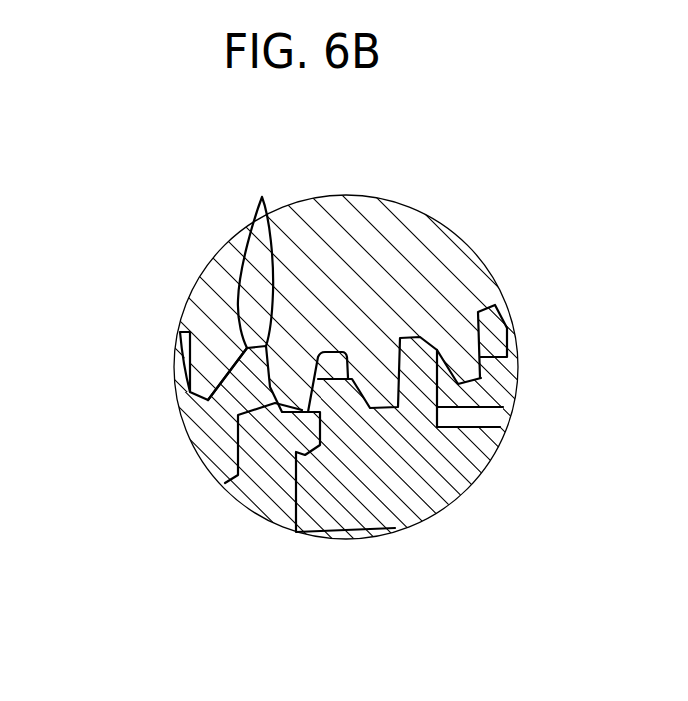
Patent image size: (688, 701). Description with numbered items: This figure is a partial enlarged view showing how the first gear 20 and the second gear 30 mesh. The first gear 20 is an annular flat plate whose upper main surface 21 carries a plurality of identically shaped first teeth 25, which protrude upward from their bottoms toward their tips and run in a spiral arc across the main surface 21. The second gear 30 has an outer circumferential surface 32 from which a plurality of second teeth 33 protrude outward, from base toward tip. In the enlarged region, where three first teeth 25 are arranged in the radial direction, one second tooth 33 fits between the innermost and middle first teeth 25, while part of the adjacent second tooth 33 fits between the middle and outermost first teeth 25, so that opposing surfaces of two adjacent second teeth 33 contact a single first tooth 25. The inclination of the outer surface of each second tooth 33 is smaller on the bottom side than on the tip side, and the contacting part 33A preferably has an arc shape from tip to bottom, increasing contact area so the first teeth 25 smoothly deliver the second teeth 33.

The first gear 20 is at (388, 487).
The main surface 21 is at (298, 530).
The first teeth 25 is at (436, 345).
The second gear 30 is at (410, 230).
The outer circumferential surface 32 is at (243, 365).
The second teeth 33 is at (208, 400).
The part that second teeth contact with first teeth 33A is at (258, 258).